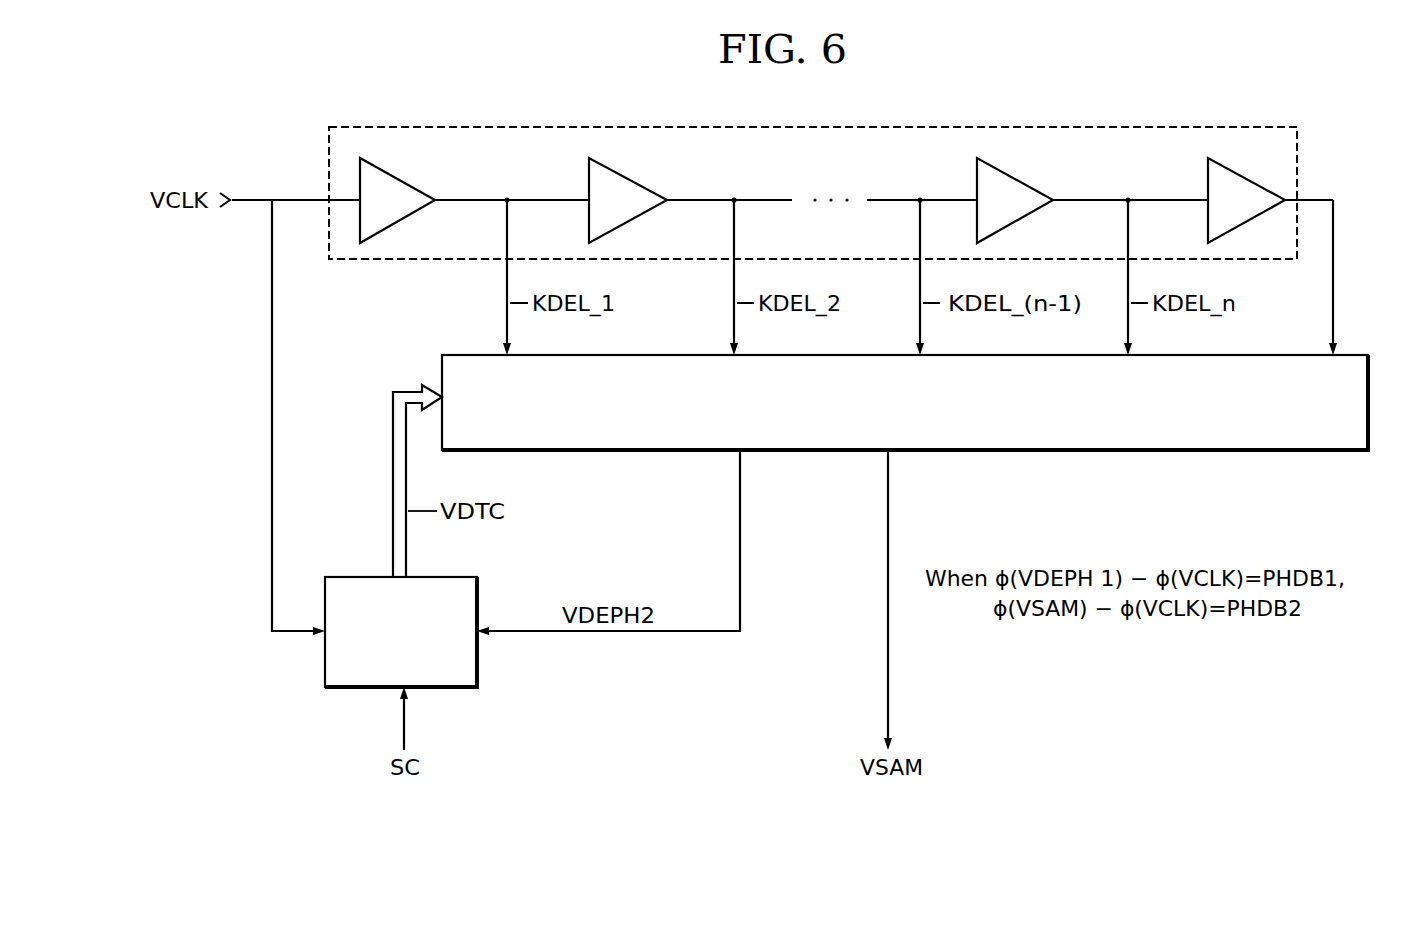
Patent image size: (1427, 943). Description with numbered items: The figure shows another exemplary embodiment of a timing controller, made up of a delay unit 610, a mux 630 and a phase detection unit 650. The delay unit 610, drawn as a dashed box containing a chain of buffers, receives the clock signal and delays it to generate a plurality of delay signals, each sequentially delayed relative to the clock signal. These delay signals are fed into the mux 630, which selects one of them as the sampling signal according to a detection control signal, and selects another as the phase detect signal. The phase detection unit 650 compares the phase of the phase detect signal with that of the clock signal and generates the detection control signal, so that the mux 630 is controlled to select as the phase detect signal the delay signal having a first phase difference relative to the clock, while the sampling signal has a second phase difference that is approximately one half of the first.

The delay unit 610 is at (1297, 158).
The mux 630 is at (1355, 351).
The phase detection unit 650 is at (458, 576).